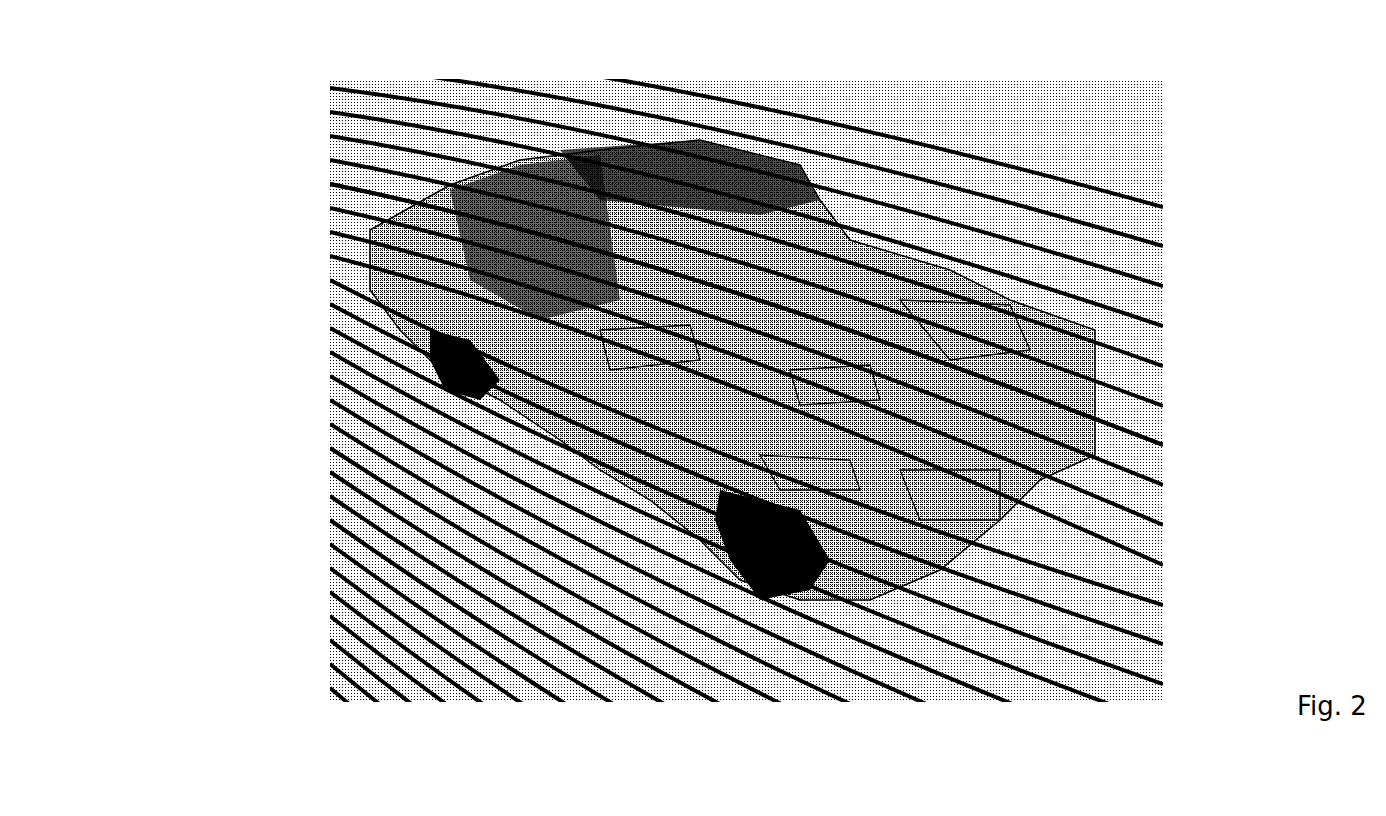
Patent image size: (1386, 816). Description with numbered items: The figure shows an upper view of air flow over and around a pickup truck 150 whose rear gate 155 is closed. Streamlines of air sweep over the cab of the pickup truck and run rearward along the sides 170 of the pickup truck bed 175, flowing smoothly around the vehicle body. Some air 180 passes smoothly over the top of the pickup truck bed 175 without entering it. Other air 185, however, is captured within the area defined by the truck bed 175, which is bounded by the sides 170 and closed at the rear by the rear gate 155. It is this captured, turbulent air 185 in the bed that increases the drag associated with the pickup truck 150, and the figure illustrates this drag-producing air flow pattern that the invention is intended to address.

The pickup truck 150 is at (735, 192).
The rear gate 155 is at (935, 490).
The sides of the pickup truck bed 170 is at (790, 470).
The pickup truck bed 175 is at (655, 344).
The air 180 is at (965, 330).
The turbulent air 185 is at (815, 386).